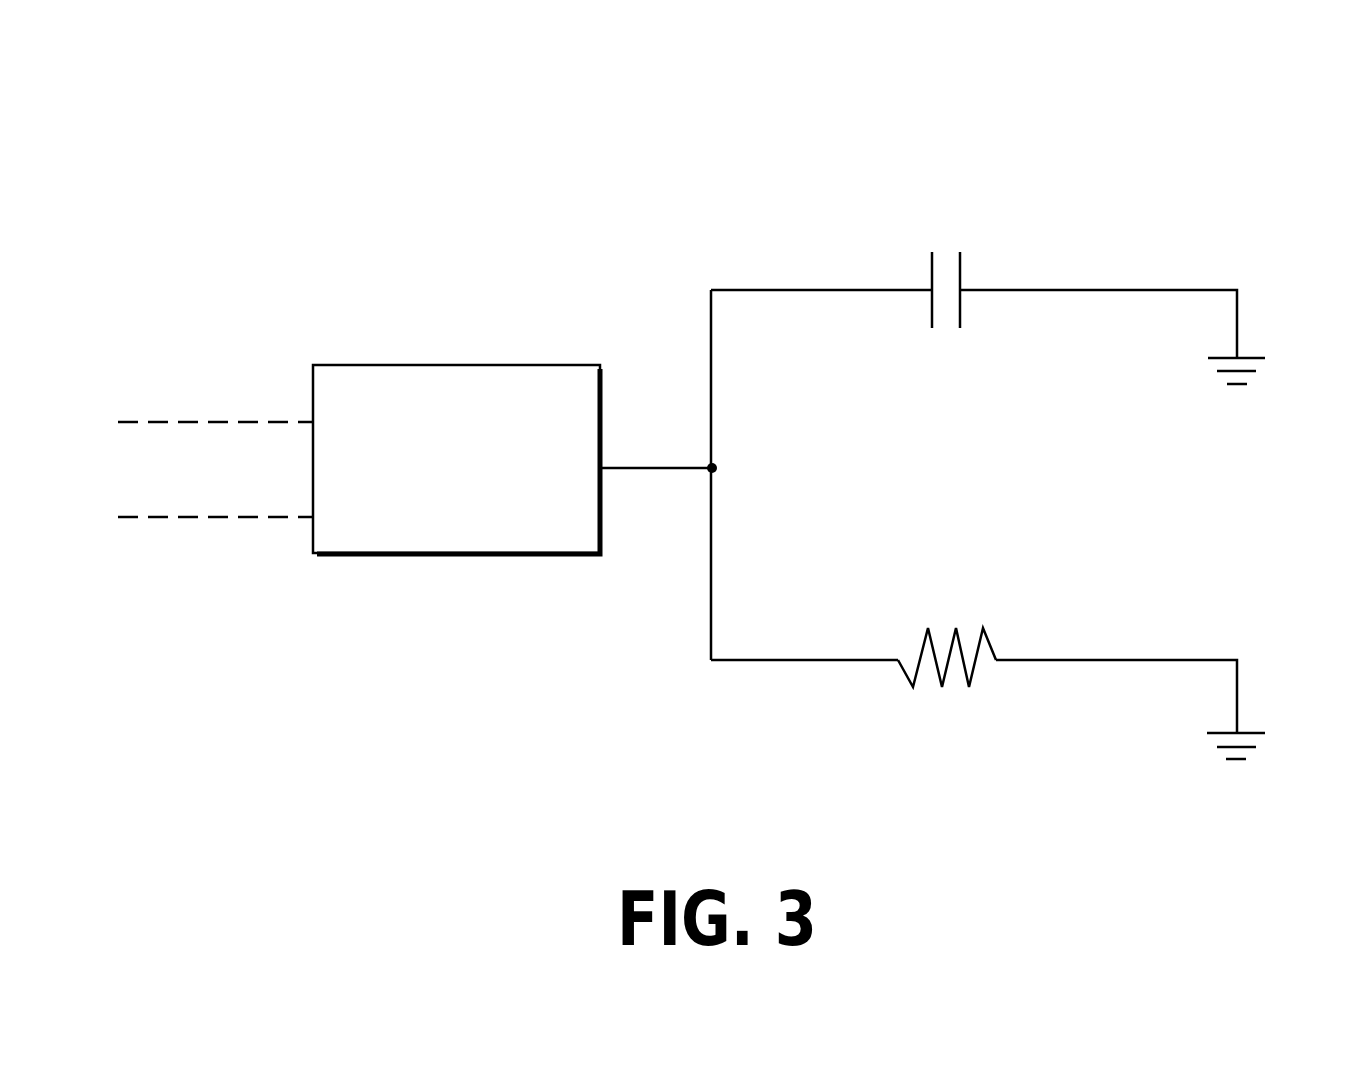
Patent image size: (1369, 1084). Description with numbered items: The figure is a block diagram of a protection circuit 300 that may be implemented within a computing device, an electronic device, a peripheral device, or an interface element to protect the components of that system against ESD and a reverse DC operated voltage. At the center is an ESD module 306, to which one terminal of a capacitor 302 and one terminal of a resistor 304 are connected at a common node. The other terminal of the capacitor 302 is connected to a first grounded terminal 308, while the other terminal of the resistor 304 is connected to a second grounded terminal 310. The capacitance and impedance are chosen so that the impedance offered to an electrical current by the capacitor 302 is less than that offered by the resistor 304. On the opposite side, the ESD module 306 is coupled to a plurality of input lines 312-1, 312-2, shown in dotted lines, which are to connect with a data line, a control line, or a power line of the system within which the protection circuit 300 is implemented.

The protection circuit 300 is at (1227, 140).
The capacitor 302 is at (960, 263).
The resistor 304 is at (969, 687).
The ESD module 306 is at (456, 459).
The first grounded terminal 308 is at (1253, 358).
The second grounded terminal 310 is at (1253, 733).
The input line 312-1 is at (157, 422).
The input line 312-2 is at (213, 517).